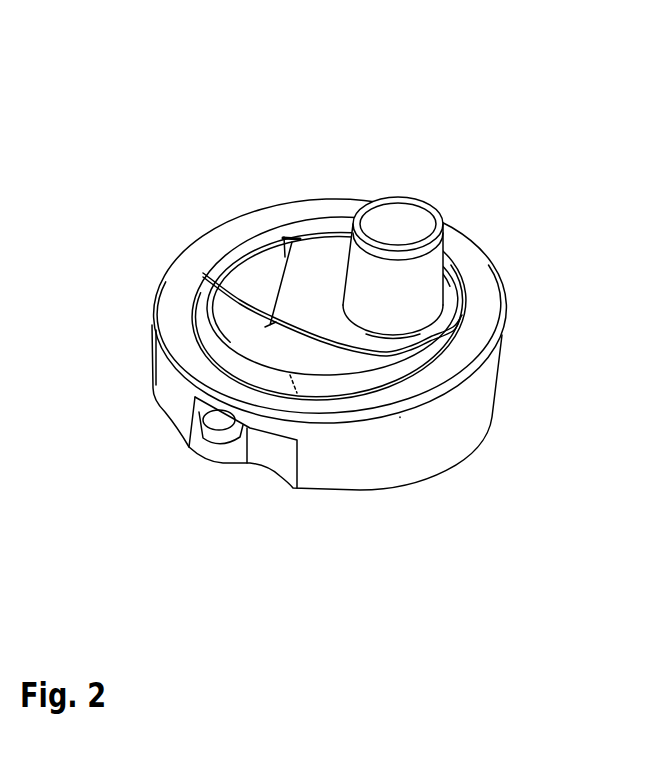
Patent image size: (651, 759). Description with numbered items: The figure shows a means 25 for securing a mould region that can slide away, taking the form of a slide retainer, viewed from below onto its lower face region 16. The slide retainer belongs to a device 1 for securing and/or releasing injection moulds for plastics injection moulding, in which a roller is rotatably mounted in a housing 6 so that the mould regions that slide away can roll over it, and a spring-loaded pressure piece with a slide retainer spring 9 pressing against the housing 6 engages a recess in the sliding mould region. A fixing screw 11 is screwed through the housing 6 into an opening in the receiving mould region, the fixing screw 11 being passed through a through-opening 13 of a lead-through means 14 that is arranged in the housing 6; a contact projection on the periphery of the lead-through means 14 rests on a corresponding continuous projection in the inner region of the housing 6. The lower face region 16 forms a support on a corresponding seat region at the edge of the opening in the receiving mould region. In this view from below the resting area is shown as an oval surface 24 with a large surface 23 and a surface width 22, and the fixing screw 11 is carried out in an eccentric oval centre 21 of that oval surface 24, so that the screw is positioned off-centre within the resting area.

The device 1 is at (197, 152).
The housing 6 is at (467, 433).
The slide retainer spring 9 is at (483, 342).
The fixing screw 11 is at (438, 278).
The through-opening 13 is at (398, 329).
The lead-through means 14 is at (216, 278).
The lower face region 16 is at (247, 277).
The eccentric oval centre 21 is at (320, 290).
The surface width 22 is at (284, 237).
The large surface 23 is at (252, 238).
The oval surface 24 is at (330, 252).
The means for securing a mould region that can slide away 25 is at (140, 212).